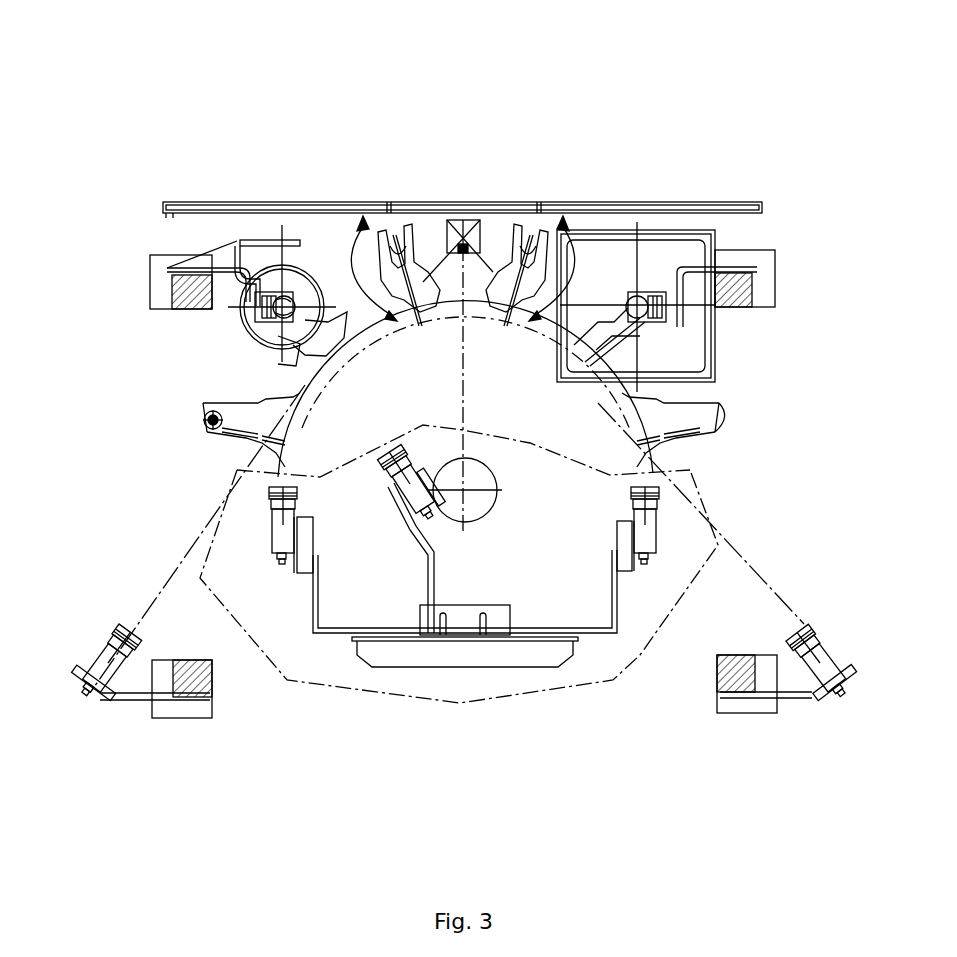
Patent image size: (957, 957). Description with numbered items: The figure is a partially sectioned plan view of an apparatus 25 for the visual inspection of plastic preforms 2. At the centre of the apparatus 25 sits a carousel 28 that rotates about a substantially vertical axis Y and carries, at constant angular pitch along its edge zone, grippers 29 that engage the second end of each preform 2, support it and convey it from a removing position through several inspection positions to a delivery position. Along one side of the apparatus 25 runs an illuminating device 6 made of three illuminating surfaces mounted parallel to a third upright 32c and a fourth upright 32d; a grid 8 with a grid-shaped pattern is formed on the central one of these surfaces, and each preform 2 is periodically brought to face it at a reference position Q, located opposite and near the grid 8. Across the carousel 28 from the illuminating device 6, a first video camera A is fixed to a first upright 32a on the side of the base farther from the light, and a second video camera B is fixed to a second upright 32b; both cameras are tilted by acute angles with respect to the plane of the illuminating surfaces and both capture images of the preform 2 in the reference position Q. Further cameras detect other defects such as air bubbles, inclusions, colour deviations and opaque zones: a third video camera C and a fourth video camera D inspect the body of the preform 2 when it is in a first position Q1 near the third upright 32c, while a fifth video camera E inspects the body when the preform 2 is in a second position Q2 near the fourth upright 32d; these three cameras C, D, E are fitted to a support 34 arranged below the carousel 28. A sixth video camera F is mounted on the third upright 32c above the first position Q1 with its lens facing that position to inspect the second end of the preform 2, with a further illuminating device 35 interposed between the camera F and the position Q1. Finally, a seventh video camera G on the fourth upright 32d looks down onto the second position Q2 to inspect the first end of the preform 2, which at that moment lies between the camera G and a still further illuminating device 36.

The apparatus 25 is at (188, 128).
The illuminating device 6 is at (242, 201).
The grid 8 is at (403, 226).
The reference position Q is at (468, 208).
The first position Q1 is at (268, 279).
The sixth video camera F is at (273, 342).
The further illuminating device 35 is at (272, 350).
The third upright 32c is at (170, 303).
The still further illuminating device 36 is at (649, 268).
The seventh video camera G is at (655, 320).
The second position Q2 is at (668, 262).
The fourth upright 32d is at (752, 290).
The grippers 29 is at (212, 440).
The preform 2 is at (200, 424).
The carousel 28 is at (724, 463).
The vertical axis Y is at (470, 495).
The support 34 is at (316, 637).
The third video camera C is at (268, 532).
The fifth video camera E is at (628, 494).
The fourth video camera D is at (386, 500).
The first video camera A is at (94, 670).
The first upright 32a is at (212, 682).
The second video camera B is at (812, 630).
The second upright 32b is at (717, 680).